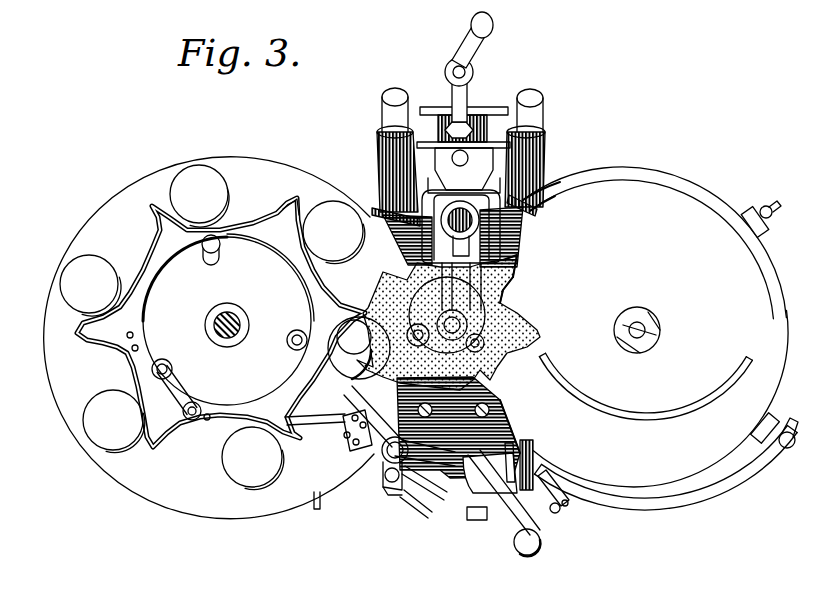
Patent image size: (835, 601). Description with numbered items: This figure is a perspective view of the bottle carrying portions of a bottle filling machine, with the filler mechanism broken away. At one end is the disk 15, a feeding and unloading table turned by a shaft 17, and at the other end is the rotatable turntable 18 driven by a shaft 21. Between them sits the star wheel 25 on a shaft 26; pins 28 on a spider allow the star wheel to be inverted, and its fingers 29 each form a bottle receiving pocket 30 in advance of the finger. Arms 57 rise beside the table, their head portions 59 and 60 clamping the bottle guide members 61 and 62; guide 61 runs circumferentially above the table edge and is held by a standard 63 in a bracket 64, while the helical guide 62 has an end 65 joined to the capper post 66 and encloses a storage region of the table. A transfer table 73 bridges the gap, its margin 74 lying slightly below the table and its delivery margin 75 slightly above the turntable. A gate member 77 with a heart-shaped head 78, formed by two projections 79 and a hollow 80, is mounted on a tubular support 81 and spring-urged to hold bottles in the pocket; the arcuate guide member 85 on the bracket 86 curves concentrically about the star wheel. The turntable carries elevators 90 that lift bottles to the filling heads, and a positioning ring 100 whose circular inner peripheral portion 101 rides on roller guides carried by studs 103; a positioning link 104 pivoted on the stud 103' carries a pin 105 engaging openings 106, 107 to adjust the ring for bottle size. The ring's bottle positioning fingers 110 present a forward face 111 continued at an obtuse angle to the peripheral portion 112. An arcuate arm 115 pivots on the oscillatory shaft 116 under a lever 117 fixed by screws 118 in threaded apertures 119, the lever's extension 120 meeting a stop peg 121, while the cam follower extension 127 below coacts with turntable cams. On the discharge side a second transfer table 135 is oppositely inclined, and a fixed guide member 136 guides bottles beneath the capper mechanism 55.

The disk 15 is at (684, 203).
The shaft 17 is at (637, 322).
The rotatable turntable 18 is at (62, 385).
The shaft 21 is at (223, 338).
The star wheel 25 is at (533, 332).
The shaft 26 is at (410, 293).
The pins 28 is at (479, 341).
The fingers 29 is at (509, 270).
The bottle receiving pocket 30 is at (505, 286).
The capper mechanism 55 is at (545, 140).
The arms 57 is at (750, 232).
The head portion 59 is at (788, 448).
The head portion 60 is at (766, 206).
The bottle guide member 61 is at (718, 489).
The bottle guide member 62 is at (772, 267).
The standard 63 is at (560, 508).
The bracket 64 is at (553, 523).
The end 65 is at (562, 182).
The capper post 66 is at (543, 203).
The transfer table 73 is at (508, 431).
The margin 74 is at (498, 432).
The delivery margin 75 is at (398, 409).
The gate member 77 is at (507, 523).
The heart-shaped head 78 is at (534, 451).
The projections 79 is at (510, 449).
The hollow 80 is at (485, 456).
The tubular support 81 is at (517, 561).
The guide member 85 is at (440, 496).
The bracket 86 is at (420, 499).
The elevators 90 is at (212, 309).
The positioning ring 100 is at (268, 228).
The circular inner peripheral portion 101 is at (290, 273).
The studs 103 is at (254, 292).
The stud 103' is at (167, 349).
The positioning link 104 is at (180, 385).
The pin 105 is at (198, 406).
The openings 106 is at (207, 421).
The openings 107 is at (127, 336).
The bottle positioning fingers 110 is at (298, 201).
The forward face 111 is at (274, 427).
The peripheral portion 112 is at (250, 428).
The arcuate arm 115 is at (348, 391).
The oscillatory shaft 116 is at (394, 490).
The lever 117 is at (346, 437).
The screws 118 is at (348, 421).
The threaded apertures 119 is at (350, 446).
The extension 120 is at (403, 496).
The stop peg 121 is at (391, 482).
The cam follower extension 127 is at (320, 509).
The transfer table 135 is at (518, 231).
The fixed guide member 136 is at (383, 215).